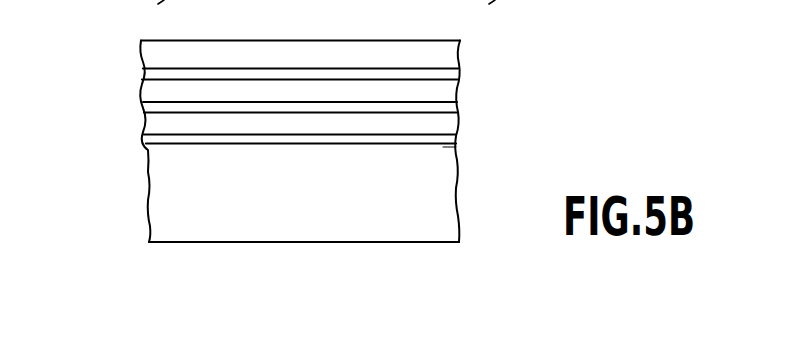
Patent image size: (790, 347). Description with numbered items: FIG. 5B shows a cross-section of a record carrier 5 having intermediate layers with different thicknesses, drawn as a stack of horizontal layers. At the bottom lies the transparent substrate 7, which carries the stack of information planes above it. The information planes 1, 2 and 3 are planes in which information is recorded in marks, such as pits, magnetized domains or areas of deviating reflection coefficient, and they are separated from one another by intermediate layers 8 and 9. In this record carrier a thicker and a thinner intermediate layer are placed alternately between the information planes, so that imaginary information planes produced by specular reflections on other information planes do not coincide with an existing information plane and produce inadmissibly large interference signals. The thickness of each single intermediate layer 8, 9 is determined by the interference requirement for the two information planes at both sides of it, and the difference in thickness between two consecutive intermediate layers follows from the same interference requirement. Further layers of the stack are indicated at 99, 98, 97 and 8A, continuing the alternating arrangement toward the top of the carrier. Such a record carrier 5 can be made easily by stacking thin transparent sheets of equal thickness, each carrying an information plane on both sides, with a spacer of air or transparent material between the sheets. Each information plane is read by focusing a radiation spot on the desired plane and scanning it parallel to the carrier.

The record carrier 5 is at (78, 100).
The transparent substrate 7 is at (447, 215).
The upper protective layer 99 is at (440, 66).
The intermediate layer 98 is at (448, 73).
The information plane 3 is at (441, 103).
The intermediate layer 9 is at (440, 119).
The information plane 2 is at (445, 135).
The intermediate layer 8 is at (444, 138).
The information plane 1 is at (443, 149).
The region 97 is at (345, 102).
The region 8A is at (386, 112).